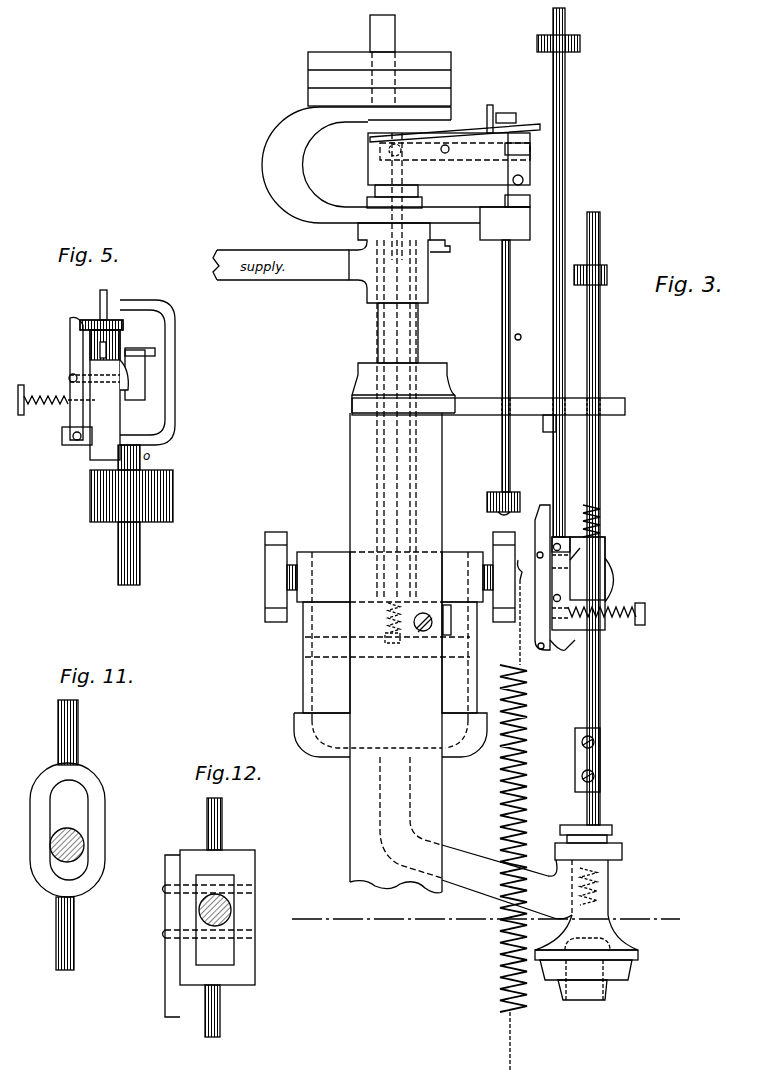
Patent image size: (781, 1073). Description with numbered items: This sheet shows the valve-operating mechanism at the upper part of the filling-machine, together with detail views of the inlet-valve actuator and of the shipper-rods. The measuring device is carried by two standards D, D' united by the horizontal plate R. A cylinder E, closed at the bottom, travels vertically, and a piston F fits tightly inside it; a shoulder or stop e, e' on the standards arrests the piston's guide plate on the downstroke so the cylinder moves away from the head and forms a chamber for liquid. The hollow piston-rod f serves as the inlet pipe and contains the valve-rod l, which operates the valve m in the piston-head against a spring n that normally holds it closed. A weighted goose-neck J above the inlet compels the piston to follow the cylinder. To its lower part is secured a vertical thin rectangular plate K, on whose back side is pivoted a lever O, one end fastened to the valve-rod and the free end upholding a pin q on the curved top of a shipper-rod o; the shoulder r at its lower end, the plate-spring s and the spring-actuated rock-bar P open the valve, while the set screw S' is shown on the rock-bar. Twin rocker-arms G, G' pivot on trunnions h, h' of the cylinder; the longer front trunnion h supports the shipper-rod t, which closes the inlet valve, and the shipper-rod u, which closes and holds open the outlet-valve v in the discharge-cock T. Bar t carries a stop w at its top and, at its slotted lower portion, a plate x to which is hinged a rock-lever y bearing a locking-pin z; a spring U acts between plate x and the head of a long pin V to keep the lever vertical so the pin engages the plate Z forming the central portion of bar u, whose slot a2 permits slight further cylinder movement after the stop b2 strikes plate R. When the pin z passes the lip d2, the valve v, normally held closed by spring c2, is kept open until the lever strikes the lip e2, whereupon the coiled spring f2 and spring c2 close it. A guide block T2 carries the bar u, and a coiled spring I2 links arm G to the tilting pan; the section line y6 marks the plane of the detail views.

In FIG. 3, the goose-neck J is at (396, 165).
In FIG. 3, the vertical thin rectangular plate K is at (448, 186).
In FIG. 5, the vertical thin rectangular plate K is at (96, 375).
In FIG. 3, the spring-actuated rock-bar P is at (455, 151).
In FIG. 5, the spring-actuated rock-bar P is at (70, 350).
In FIG. 3, the lever O is at (418, 153).
In FIG. 5, the lever O is at (135, 395).
In FIG. 3, the shipper-rod o is at (518, 337).
In FIG. 5, the shipper-rod o is at (112, 378).
In FIG. 3, the plate-spring s is at (540, 120).
In FIG. 5, the plate-spring s is at (88, 320).
In FIG. 5, the set screw S' is at (56, 410).
In FIG. 5, the pin q is at (160, 352).
In FIG. 3, the shipper-rod t is at (565, 165).
In FIG. 12, the shipper-rod t is at (207, 824).
In FIG. 3, the shoulder or stop w is at (569, 44).
In FIG. 3, the shipper-rod u is at (600, 353).
In FIG. 5, the shipper-rod u is at (136, 515).
In FIG. 11, the shipper-rod u is at (78, 728).
In FIG. 12, the shipper-rod u is at (220, 1022).
In FIG. 3, the stop b2 is at (601, 274).
In FIG. 5, the stop b2 is at (131, 496).
In FIG. 3, the shoulder or stop e is at (506, 366).
In FIG. 3, the valve-rod l is at (399, 263).
In FIG. 3, the piston-rod f is at (418, 332).
In FIG. 3, the standard D is at (402, 560).
In FIG. 3, the standard D' is at (396, 825).
In FIG. 3, the rocker-arm G' is at (281, 577).
In FIG. 3, the rocker-arm G is at (499, 577).
In FIG. 3, the trunnion h' is at (323, 626).
In FIG. 3, the trunnion h is at (464, 626).
In FIG. 11, the trunnion h is at (67, 830).
In FIG. 12, the trunnion h is at (235, 920).
In FIG. 3, the piston F is at (326, 657).
In FIG. 3, the cylinder E is at (459, 657).
In FIG. 3, the spring n is at (386, 617).
In FIG. 3, the valve m is at (390, 636).
In FIG. 3, the shoulder or stop e' is at (436, 604).
In FIG. 3, the horizontal plate R is at (625, 407).
In FIG. 3, the lip e2 is at (528, 417).
In FIG. 3, the shoulder r is at (496, 503).
In FIG. 3, the rock-lever y is at (540, 505).
In FIG. 3, the plate x is at (560, 650).
In FIG. 12, the plate x is at (209, 933).
In FIG. 3, the plate Z is at (583, 583).
In FIG. 3, the locking-pin z is at (580, 548).
In FIG. 11, the locking-pin z is at (93, 822).
In FIG. 3, the lip d2 is at (568, 548).
In FIG. 3, the coiled spring f2 is at (603, 520).
In FIG. 3, the spring U is at (620, 618).
In FIG. 3, the long pin V is at (645, 612).
In FIG. 3, the coiled spring I2 is at (504, 867).
In FIG. 3, the guide block T2 is at (597, 760).
In FIG. 3, the discharge-cock T is at (507, 882).
In FIG. 3, the spring c2 is at (597, 885).
In FIG. 3, the outlet-valve v is at (605, 943).
In FIG. 3, the section line y6 is at (486, 929).
In FIG. 11, the slot or opening a2 is at (80, 790).